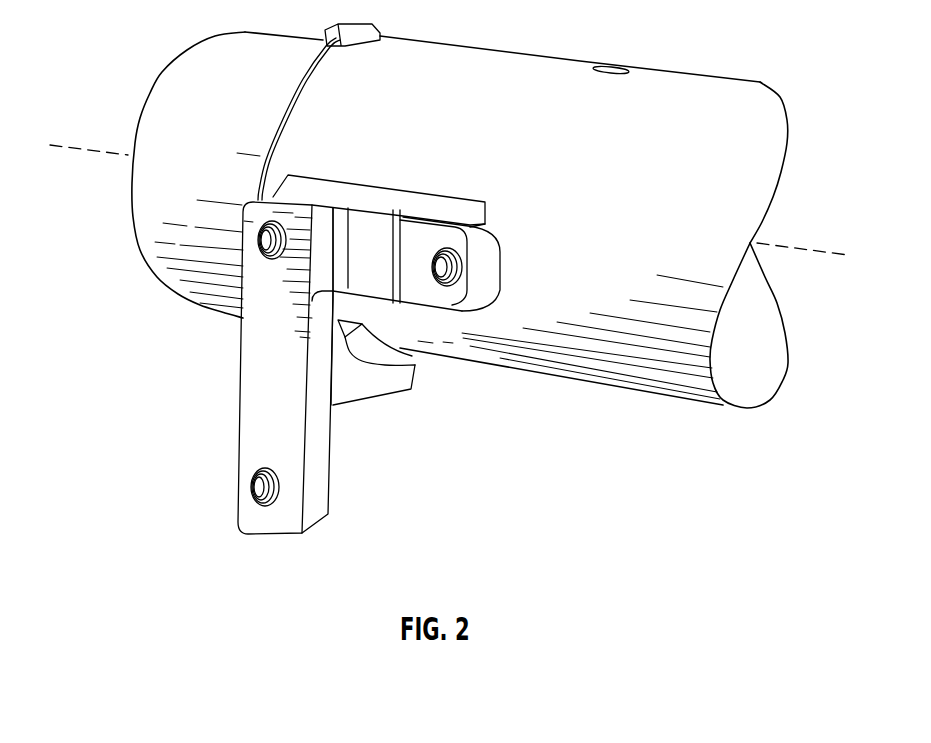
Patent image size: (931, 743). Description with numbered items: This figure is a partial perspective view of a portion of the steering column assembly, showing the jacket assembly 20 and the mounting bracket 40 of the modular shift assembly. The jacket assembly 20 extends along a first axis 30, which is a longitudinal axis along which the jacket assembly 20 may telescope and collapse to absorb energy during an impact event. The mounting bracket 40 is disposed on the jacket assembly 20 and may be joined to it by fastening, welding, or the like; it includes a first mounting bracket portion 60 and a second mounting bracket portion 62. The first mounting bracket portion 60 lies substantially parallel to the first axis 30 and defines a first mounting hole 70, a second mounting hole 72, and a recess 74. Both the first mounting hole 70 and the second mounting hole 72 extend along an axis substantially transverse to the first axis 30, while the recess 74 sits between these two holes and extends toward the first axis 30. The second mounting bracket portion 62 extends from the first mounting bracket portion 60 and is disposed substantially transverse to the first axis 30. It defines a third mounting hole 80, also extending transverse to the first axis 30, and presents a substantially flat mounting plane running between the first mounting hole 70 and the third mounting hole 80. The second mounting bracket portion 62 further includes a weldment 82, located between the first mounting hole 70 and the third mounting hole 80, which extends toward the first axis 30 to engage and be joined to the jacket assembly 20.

The jacket assembly 20 is at (644, 62).
The first axis 30 is at (782, 248).
The mounting bracket 40 is at (118, 496).
The first mounting bracket portion 60 is at (338, 358).
The second mounting bracket portion 62 is at (311, 537).
The first mounting hole 70 is at (257, 243).
The second mounting hole 72 is at (458, 268).
The recess 74 is at (365, 225).
The third mounting hole 80 is at (250, 493).
The weldment 82 is at (360, 403).